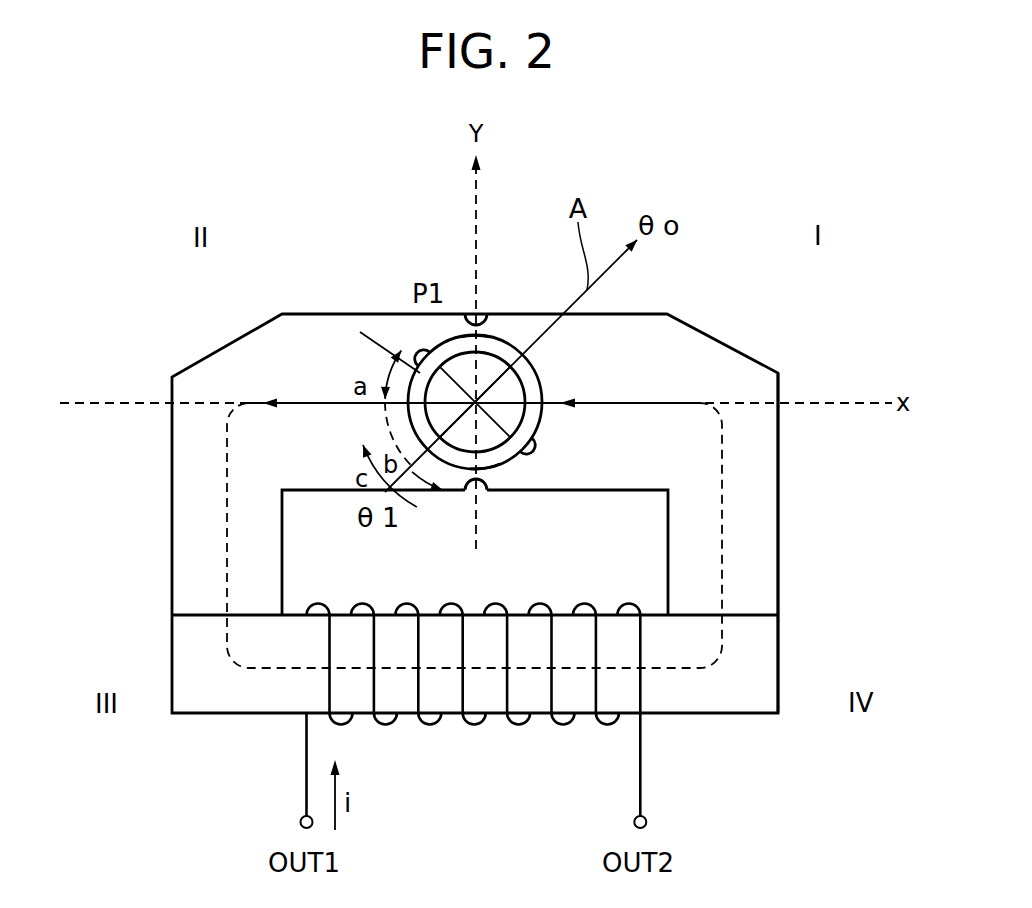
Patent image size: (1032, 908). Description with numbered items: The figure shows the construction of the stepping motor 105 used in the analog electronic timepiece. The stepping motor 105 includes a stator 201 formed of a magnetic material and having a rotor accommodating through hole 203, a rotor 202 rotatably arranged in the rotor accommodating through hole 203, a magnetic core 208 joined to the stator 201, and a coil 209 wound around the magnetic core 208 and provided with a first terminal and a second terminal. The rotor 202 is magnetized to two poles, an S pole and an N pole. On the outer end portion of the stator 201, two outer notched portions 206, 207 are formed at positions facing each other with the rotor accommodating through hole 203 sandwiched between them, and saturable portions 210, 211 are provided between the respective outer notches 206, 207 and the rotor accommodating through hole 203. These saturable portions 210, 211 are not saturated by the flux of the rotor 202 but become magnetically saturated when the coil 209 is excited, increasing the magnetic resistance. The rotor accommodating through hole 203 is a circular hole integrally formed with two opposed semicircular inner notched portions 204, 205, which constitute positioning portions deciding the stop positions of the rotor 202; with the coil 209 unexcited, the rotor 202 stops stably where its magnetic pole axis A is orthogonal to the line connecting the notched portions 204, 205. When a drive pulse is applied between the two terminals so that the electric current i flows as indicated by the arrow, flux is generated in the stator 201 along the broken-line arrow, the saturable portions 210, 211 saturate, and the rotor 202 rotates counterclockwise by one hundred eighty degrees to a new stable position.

The stepping motor 105 is at (193, 340).
The stator 201 is at (760, 452).
The rotor 202 is at (512, 400).
The rotor accommodating through hole 203 is at (528, 382).
The notched portion (inner notch) 204 is at (533, 455).
The notched portion (inner notch) 205 is at (401, 347).
The notched portion (outer notch) 206 is at (475, 315).
The notched portion (outer notch) 207 is at (473, 492).
The magnetic core 208 is at (192, 663).
The coil 209 is at (430, 725).
The saturable portion 210 is at (472, 334).
The saturable portion 211 is at (497, 473).